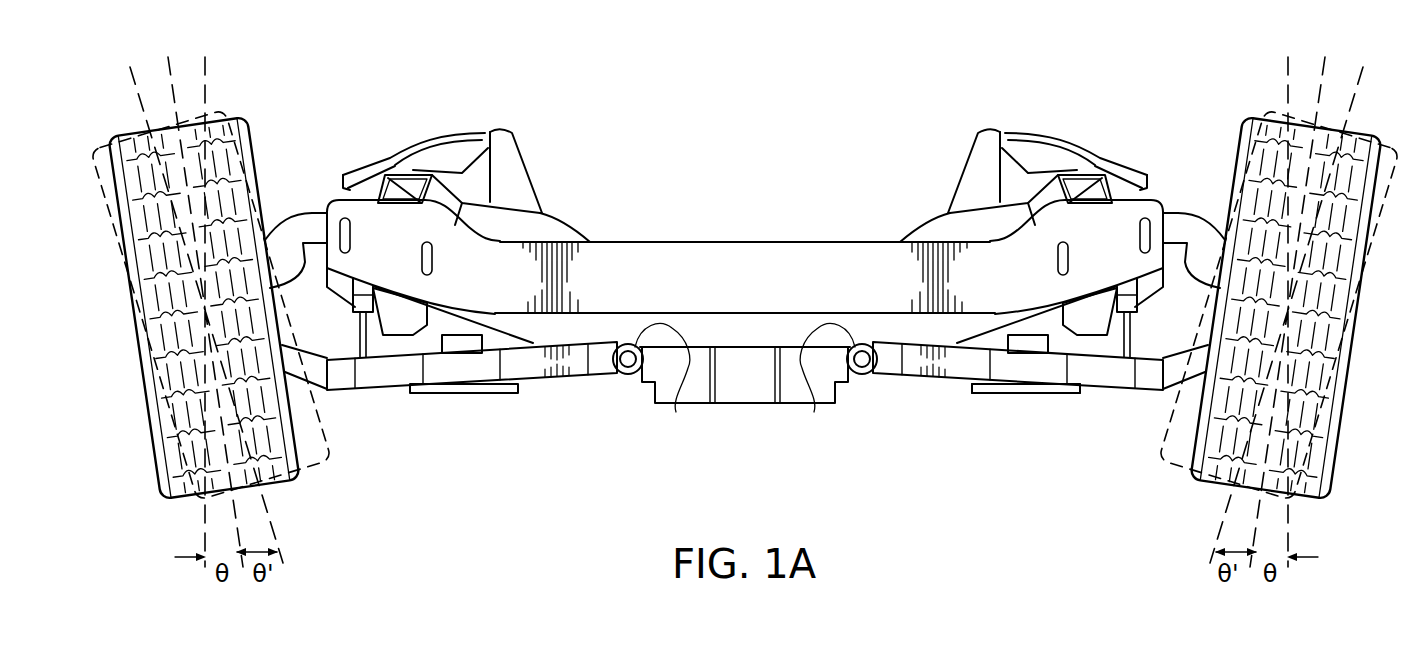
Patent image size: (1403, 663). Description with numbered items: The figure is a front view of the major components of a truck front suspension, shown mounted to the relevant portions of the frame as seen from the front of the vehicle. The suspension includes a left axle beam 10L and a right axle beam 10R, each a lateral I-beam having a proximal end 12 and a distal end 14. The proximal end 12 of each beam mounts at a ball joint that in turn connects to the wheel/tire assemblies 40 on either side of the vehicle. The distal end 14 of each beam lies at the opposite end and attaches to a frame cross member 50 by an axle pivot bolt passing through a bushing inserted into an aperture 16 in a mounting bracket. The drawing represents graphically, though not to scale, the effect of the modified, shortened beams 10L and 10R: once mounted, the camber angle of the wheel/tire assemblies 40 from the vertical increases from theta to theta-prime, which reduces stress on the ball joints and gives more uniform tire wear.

The right axle beam 10R is at (535, 392).
The left axle beam 10L is at (957, 393).
The proximal end 12 is at (1103, 392).
The distal end 14 is at (614, 370).
The aperture 16 is at (676, 412).
The wheel/tire assembly 40 is at (258, 157).
The frame cross member 50 is at (668, 250).